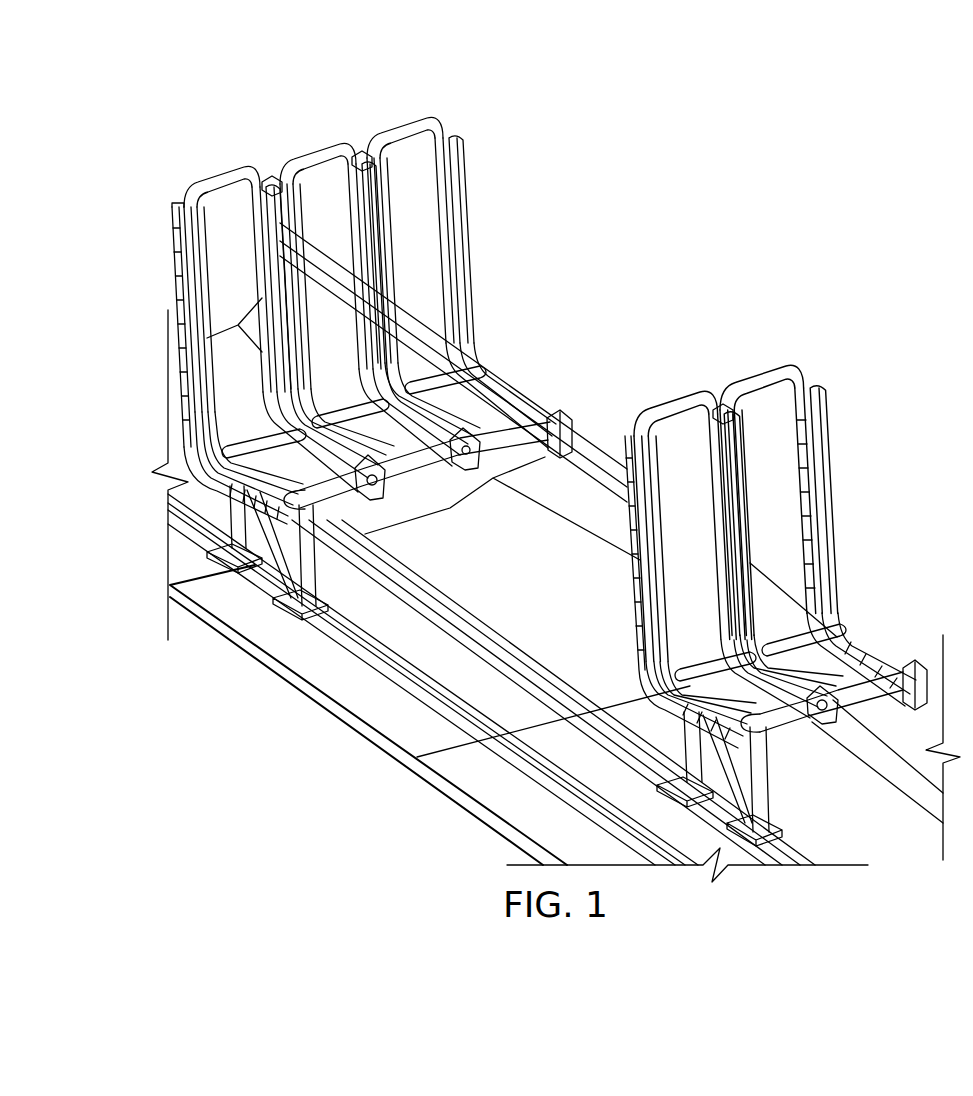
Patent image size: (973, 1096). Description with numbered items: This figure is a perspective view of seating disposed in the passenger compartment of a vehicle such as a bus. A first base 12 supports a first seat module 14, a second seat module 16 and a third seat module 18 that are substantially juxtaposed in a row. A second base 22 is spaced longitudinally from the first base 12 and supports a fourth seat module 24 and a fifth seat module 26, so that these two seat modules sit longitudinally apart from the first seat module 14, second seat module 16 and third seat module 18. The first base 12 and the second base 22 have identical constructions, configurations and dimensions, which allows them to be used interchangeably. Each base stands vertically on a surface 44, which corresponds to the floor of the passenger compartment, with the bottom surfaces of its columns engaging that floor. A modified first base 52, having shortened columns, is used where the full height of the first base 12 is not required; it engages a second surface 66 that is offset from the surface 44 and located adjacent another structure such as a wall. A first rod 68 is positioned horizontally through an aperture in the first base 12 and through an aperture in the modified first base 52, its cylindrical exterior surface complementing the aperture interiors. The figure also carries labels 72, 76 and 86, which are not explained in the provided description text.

The first base 12 is at (222, 503).
The first seat module 14 is at (223, 172).
The second seat module 16 is at (322, 148).
The third seat module 18 is at (412, 118).
The second base 22 is at (777, 787).
The fourth seat module 24 is at (683, 396).
The fifth seat module 26 is at (790, 363).
The surface 44 is at (437, 673).
The modified first base 52 is at (568, 404).
The second surface 66 is at (583, 497).
The first rod 68 is at (262, 420).
The seat frame bend 72 is at (740, 610).
The back channel 76 is at (177, 207).
The frame connector 86 is at (268, 172).